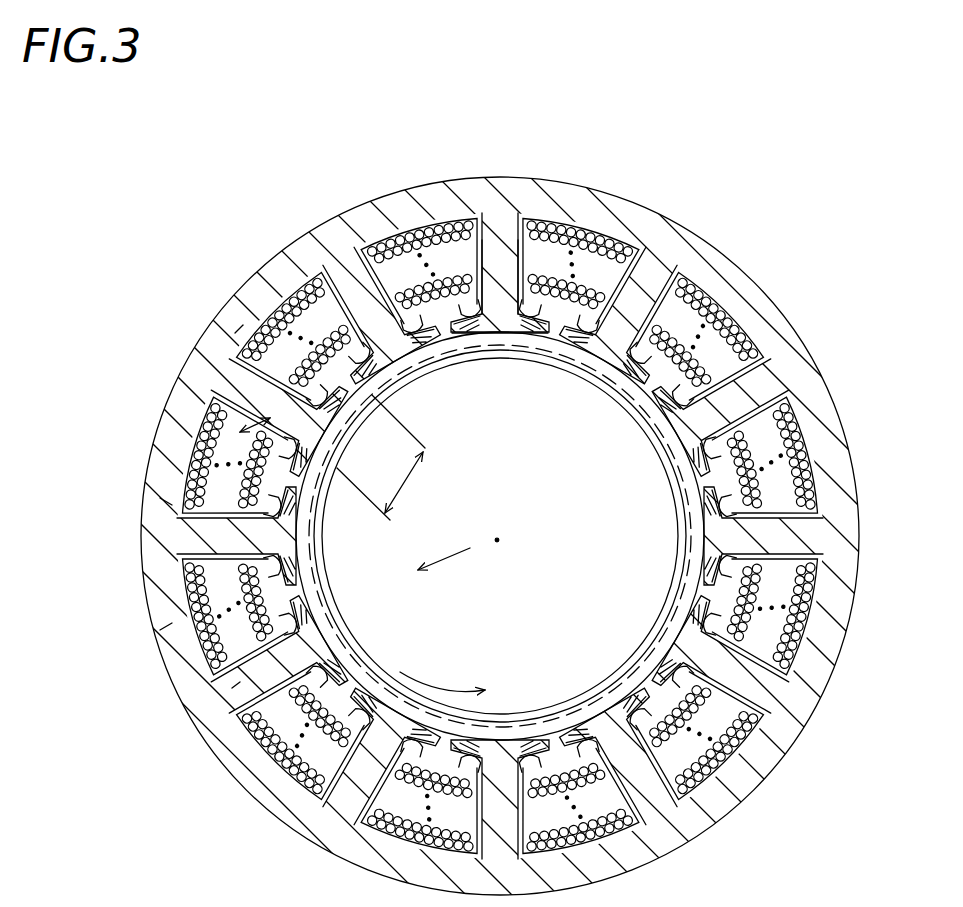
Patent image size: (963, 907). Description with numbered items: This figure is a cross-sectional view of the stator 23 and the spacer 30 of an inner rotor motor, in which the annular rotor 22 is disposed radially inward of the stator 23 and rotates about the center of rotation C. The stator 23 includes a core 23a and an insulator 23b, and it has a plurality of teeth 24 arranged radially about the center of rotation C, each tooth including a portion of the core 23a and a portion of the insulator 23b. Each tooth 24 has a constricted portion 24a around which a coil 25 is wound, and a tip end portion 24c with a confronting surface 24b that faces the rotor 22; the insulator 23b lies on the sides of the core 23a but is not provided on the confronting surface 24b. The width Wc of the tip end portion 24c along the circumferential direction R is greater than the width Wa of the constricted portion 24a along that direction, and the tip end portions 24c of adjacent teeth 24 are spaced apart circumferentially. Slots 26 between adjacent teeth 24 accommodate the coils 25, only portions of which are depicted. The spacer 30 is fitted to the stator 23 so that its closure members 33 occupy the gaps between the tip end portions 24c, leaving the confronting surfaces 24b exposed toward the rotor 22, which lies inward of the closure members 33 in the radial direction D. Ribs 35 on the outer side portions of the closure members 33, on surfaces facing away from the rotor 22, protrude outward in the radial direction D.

The rotor 22 is at (232, 688).
The stator 23 is at (141, 550).
The core 23a is at (500, 225).
The insulator 23b is at (495, 205).
The teeth 24 is at (382, 280).
The constricted portion 24a is at (518, 262).
The confronting surface 24b is at (400, 378).
The tip end portion 24c is at (430, 352).
The coils 25 is at (440, 250).
The slots 26 is at (232, 330).
The spacer 30 is at (657, 458).
The closure members 33 is at (300, 320).
The ribs 35 is at (162, 499).
The width of the constricted portion Wa is at (262, 410).
The width of the tip end portion Wc is at (393, 457).
The center of rotation C is at (497, 521).
The radial direction D is at (444, 545).
The circumferential direction R is at (442, 669).